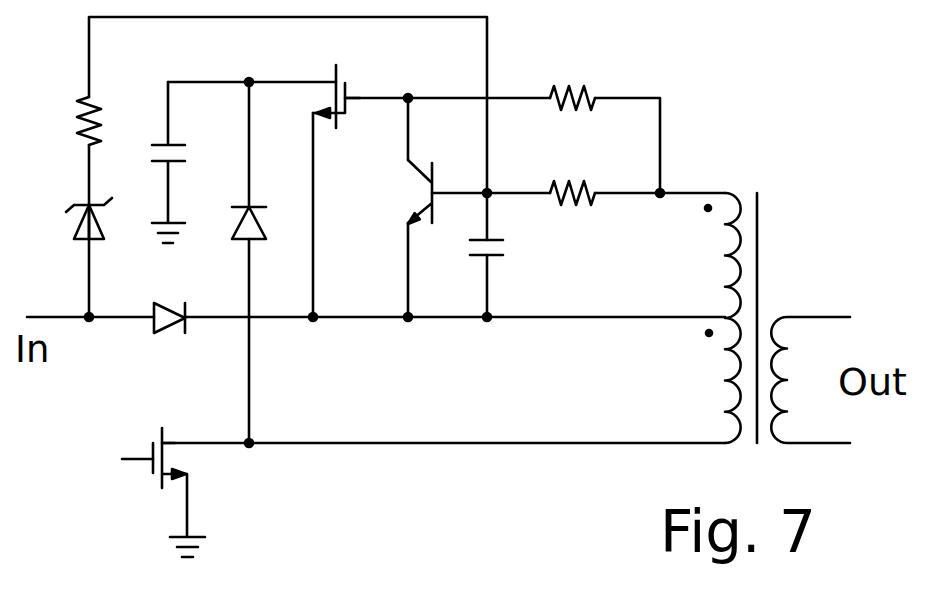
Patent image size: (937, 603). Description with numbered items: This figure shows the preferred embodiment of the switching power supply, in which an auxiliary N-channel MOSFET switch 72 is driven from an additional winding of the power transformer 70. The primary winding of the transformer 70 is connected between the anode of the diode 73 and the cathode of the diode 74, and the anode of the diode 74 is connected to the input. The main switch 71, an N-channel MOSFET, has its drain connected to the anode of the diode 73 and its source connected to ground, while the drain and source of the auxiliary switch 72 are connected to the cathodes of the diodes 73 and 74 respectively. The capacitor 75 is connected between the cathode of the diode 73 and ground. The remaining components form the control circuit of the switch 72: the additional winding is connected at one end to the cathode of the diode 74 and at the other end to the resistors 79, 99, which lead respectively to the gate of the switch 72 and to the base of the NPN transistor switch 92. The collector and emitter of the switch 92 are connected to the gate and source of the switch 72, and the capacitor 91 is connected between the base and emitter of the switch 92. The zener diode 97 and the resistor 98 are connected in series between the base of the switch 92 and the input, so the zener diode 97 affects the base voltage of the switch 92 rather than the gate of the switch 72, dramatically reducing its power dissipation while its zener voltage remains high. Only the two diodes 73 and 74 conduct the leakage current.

The power transformer 70 is at (757, 192).
The main switch 71 is at (162, 488).
The auxiliary switch 72 is at (336, 123).
The diode 73 is at (242, 206).
The diode 74 is at (160, 333).
The capacitor 75 is at (163, 145).
The resistor 79 is at (586, 88).
The capacitor 91 is at (493, 258).
The switch 92 is at (433, 166).
The zener diode 97 is at (74, 204).
The resistor 98 is at (79, 104).
The resistor 99 is at (586, 183).